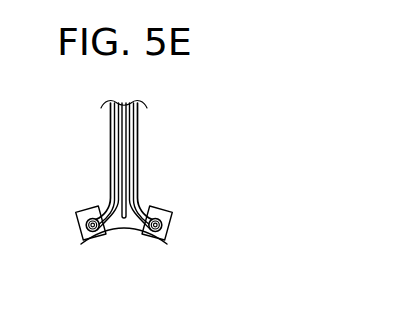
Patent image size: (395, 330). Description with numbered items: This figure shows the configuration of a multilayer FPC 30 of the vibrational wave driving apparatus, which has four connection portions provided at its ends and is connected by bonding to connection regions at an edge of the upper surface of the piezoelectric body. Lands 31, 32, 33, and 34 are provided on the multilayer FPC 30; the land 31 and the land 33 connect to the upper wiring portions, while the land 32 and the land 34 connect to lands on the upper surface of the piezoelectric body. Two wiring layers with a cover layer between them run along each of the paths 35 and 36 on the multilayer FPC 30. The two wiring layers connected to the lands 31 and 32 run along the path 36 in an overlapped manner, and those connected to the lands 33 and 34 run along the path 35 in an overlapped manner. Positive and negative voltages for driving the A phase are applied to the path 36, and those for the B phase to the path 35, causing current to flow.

The multilayer FPC 30 is at (138, 196).
The land 31 is at (172, 212).
The land 32 is at (157, 232).
The land 33 is at (90, 213).
The land 34 is at (91, 232).
The path 35 is at (119, 118).
The path 36 is at (129, 118).